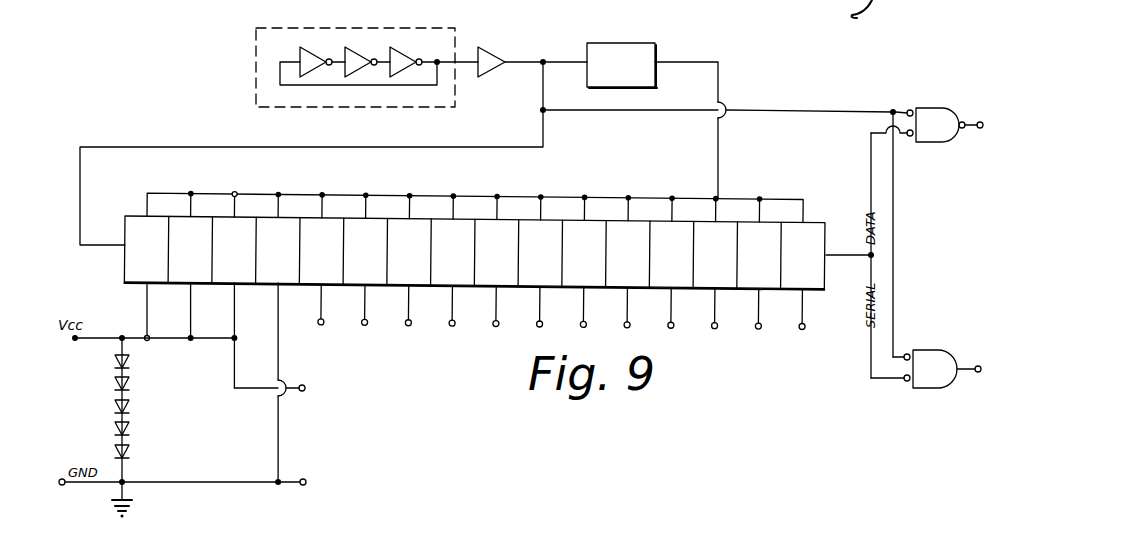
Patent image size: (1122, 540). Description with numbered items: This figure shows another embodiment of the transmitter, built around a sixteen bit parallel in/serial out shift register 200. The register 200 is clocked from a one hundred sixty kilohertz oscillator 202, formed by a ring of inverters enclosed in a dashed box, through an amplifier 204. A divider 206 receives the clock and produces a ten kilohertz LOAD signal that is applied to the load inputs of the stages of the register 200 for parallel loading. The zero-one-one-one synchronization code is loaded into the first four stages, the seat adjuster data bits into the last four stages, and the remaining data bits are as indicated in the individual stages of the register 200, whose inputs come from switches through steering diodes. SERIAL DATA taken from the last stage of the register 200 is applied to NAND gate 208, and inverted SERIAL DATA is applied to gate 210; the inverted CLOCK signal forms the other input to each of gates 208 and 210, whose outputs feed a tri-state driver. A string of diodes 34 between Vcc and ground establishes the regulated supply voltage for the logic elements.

The shift register 200 is at (570, 193).
The oscillator 202 is at (256, 30).
The amplifier 204 is at (490, 58).
The divider 206 is at (630, 43).
The NAND gate 208 is at (925, 118).
The AND gate 210 is at (927, 352).
The string of diodes 34 is at (136, 402).